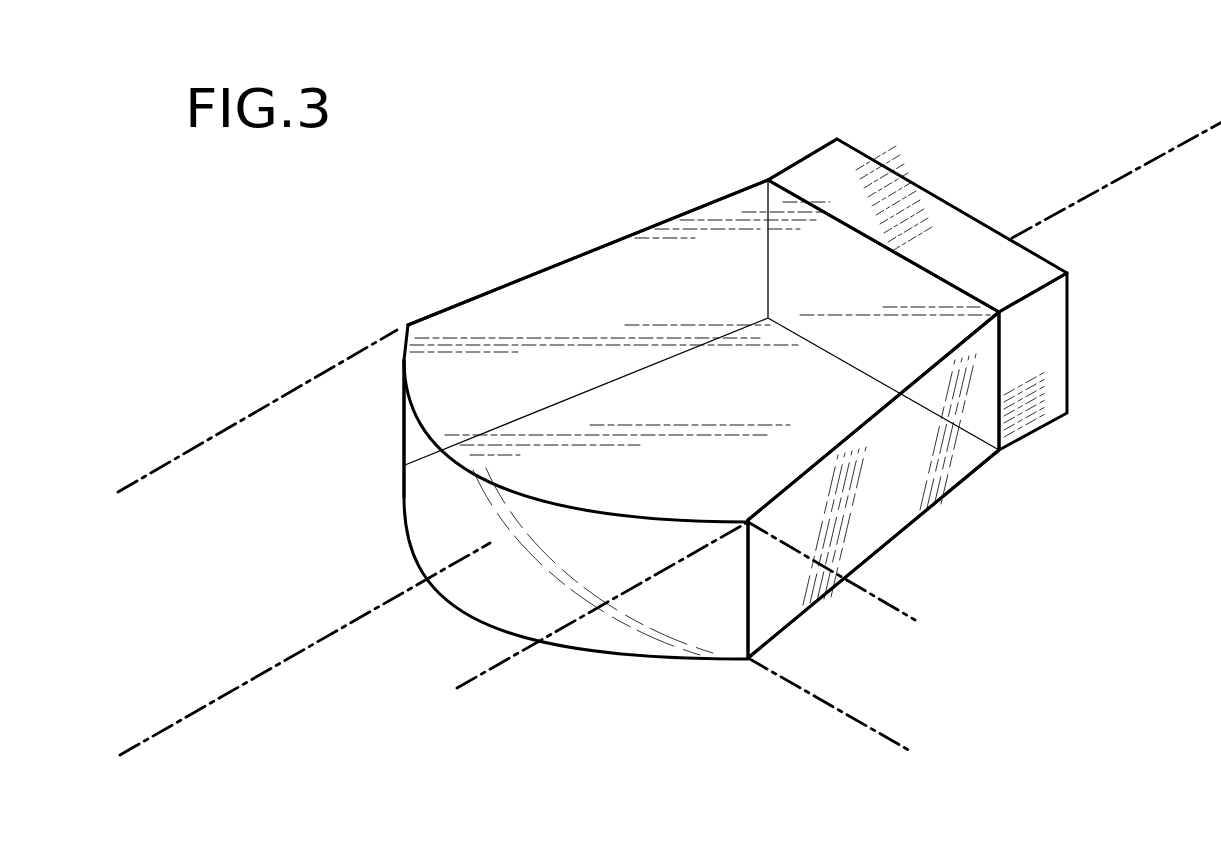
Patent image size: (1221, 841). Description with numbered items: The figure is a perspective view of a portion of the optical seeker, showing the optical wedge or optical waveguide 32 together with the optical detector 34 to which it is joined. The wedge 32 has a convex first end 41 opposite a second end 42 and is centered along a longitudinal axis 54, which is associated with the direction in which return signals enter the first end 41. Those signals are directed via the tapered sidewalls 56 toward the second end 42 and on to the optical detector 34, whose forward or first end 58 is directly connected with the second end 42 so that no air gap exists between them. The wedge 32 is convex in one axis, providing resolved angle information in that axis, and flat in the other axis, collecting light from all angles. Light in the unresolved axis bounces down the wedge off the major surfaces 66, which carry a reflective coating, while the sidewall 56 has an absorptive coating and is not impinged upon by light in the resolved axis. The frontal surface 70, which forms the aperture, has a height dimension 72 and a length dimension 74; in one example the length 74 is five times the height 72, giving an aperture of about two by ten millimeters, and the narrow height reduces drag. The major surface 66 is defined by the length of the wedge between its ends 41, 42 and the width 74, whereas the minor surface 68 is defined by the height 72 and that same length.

The optical wedge 32 is at (505, 283).
The optical detector 34 is at (808, 152).
The convex first end 41 is at (444, 517).
The second end 42 is at (945, 275).
The longitudinal axis 54 is at (1186, 140).
The tapered sidewalls 56 is at (877, 500).
The first end of optical detector 58 is at (997, 412).
The major surface 66 is at (737, 395).
The minor surface 68 is at (911, 478).
The frontal surface 70 is at (625, 568).
The height dimension 72 is at (905, 615).
The length dimension 74 is at (470, 680).